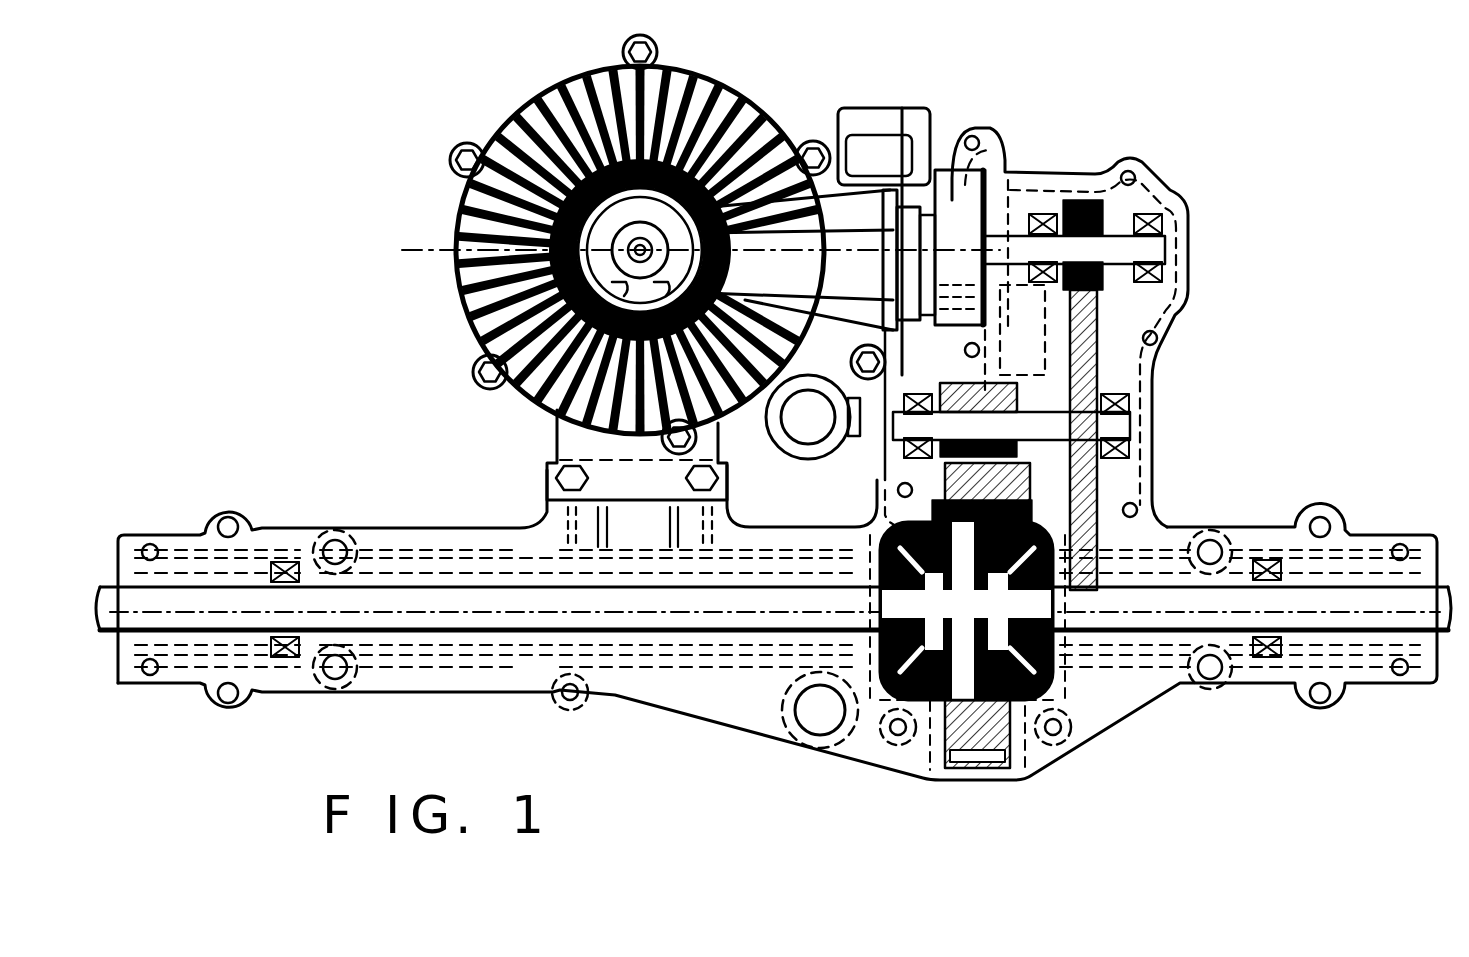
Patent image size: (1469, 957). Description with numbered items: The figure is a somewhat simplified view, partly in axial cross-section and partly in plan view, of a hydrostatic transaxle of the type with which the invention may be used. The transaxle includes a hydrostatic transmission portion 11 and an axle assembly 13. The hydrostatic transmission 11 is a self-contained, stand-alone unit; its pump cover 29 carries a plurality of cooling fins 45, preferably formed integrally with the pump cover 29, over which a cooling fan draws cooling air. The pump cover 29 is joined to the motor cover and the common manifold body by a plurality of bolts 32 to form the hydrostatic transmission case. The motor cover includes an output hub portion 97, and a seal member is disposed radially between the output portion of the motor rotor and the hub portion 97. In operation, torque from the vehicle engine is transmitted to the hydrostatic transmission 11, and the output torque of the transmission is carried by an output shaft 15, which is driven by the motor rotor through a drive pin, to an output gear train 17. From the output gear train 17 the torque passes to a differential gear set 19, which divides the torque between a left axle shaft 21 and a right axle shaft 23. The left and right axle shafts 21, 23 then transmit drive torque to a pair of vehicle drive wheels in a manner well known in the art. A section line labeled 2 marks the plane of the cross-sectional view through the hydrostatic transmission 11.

The hydrostatic transmission portion 11 is at (715, 258).
The cooling fins 45 is at (700, 80).
The pump cover 29 is at (640, 235).
The bolts 32 is at (455, 148).
The output hub portion 97 is at (950, 185).
The output shaft 15 is at (1168, 240).
The axle assembly 13 is at (1215, 392).
The output gear train 17 is at (1042, 362).
The section line 2- 2 is at (424, 250).
The left axle shaft 21 is at (112, 582).
The differential gear set 19 is at (1085, 690).
The right axle shaft 23 is at (1452, 632).